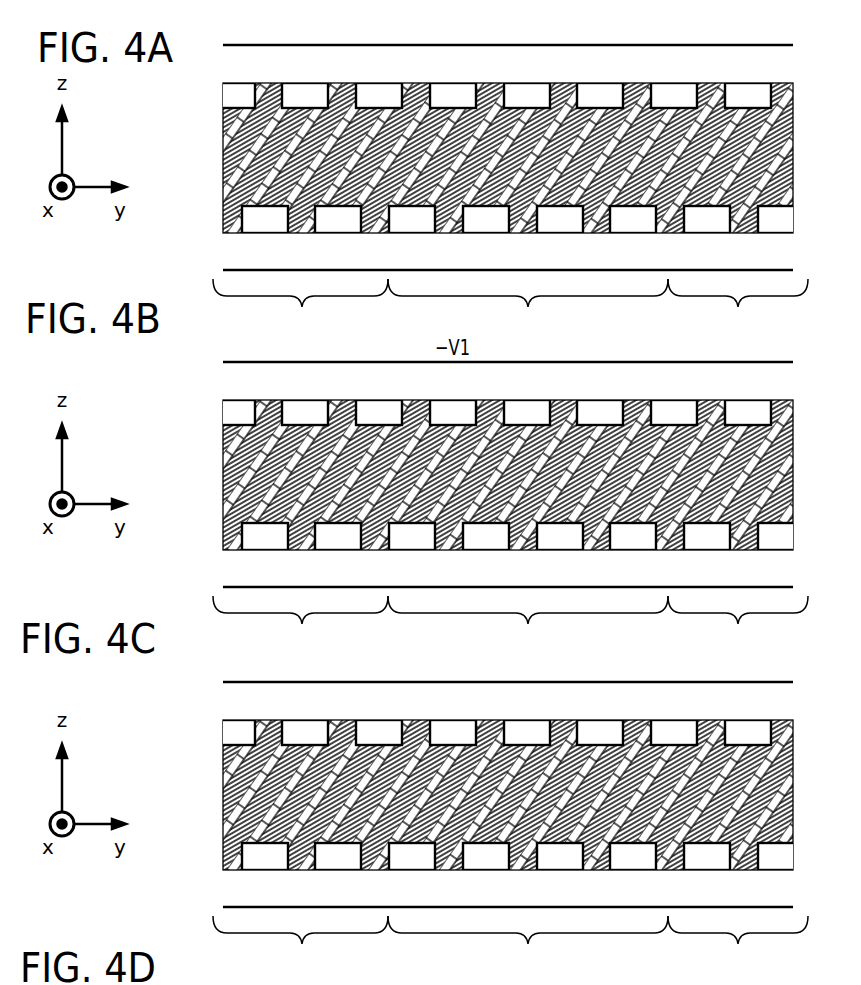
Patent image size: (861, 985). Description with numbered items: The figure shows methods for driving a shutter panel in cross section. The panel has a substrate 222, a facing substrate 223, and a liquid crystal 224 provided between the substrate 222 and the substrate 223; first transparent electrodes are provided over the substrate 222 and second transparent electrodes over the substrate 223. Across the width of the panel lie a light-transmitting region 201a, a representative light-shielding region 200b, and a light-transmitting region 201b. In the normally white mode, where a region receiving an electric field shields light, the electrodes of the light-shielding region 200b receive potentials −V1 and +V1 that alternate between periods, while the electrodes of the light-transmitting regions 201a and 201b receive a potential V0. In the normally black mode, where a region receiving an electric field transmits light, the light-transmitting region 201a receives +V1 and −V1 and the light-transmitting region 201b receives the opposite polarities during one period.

In FIG. 4A, the substrate 222 is at (233, 253).
In FIG. 4B, the substrate 222 is at (462, 592).
In FIG. 4C, the substrate 222 is at (462, 912).
In FIG. 4A, the substrate 223 is at (322, 50).
In FIG. 4B, the substrate 223 is at (459, 362).
In FIG. 4C, the substrate 223 is at (459, 682).
In FIG. 4A, the liquid crystal 224 is at (222, 163).
In FIG. 4B, the liquid crystal 224 is at (463, 474).
In FIG. 4C, the liquid crystal 224 is at (463, 794).
In FIG. 4A, the light-transmitting region 201a is at (300, 306).
In FIG. 4B, the light-transmitting region 201a is at (300, 623).
In FIG. 4C, the light-transmitting region 201a is at (300, 943).
In FIG. 4A, the light-shielding region 200b is at (528, 308).
In FIG. 4B, the light-shielding region 200b is at (528, 625).
In FIG. 4C, the light-shielding region 200b is at (528, 945).
In FIG. 4A, the light-transmitting region 201b is at (738, 306).
In FIG. 4B, the light-transmitting region 201b is at (738, 623).
In FIG. 4C, the light-transmitting region 201b is at (738, 943).